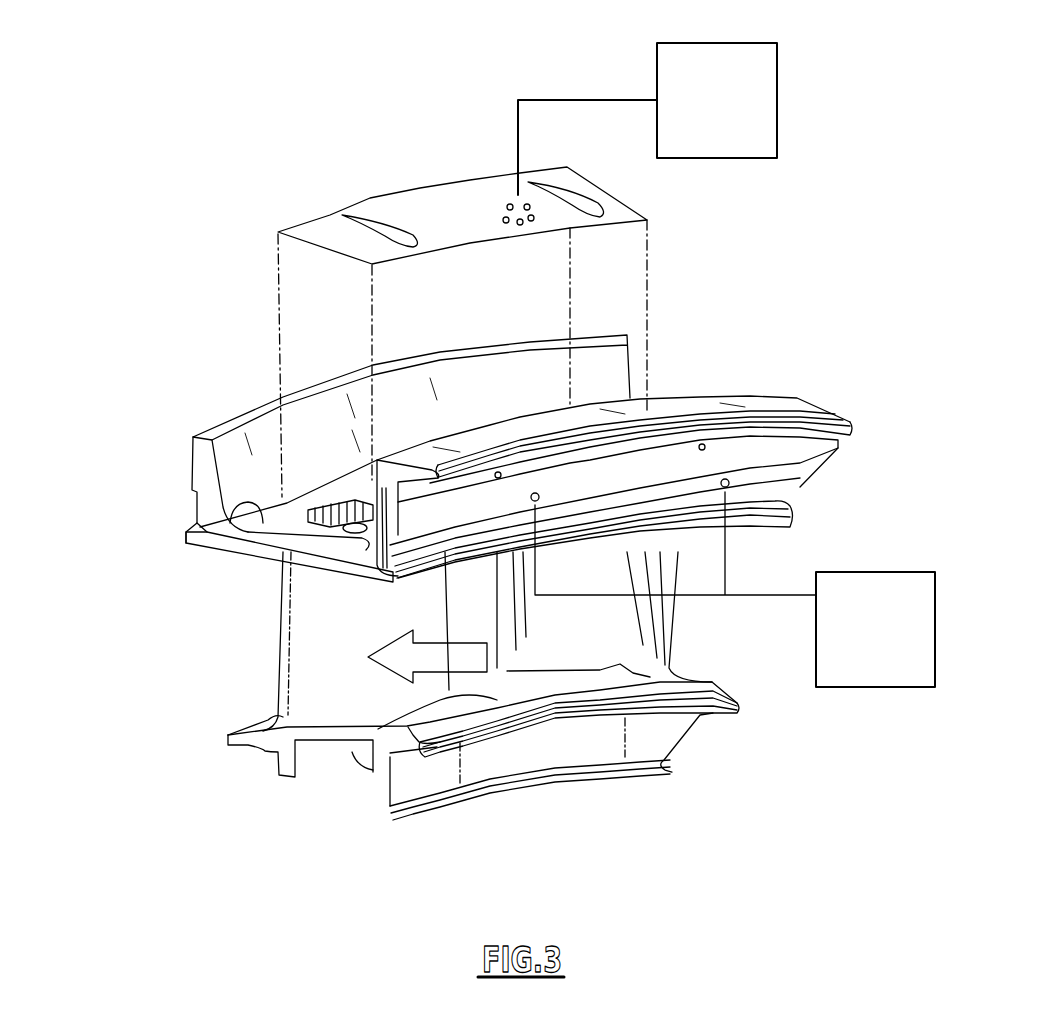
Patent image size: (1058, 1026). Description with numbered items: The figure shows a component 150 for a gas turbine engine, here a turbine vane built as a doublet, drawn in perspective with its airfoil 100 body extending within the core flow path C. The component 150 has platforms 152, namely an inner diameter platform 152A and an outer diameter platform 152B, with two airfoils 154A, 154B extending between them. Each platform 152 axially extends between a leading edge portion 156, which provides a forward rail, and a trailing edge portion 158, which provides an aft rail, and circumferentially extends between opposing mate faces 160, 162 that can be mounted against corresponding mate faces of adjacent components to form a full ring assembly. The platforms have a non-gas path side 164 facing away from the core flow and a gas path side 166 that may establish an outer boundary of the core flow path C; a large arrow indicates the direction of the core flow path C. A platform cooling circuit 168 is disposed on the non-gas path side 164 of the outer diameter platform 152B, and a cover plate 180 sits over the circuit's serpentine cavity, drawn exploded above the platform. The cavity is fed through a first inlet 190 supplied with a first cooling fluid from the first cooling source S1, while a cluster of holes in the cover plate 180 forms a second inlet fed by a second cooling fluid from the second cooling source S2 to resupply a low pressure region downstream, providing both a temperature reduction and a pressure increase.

The airfoil 100 is at (474, 641).
The component 150 is at (140, 422).
The platform 152 is at (168, 541).
The inner diameter platform 152A is at (330, 742).
The outer diameter platform 152B is at (557, 573).
The airfoil 154A is at (312, 630).
The airfoil 154B is at (635, 613).
The leading edge portion 156 is at (770, 455).
The trailing edge portion 158 is at (505, 345).
The mate face 160 is at (772, 510).
The mate face 162 is at (240, 548).
The non-gas path side 164 is at (276, 500).
The gas path side 166 is at (253, 565).
The platform cooling circuit 168 is at (348, 494).
The cover plate 180 is at (440, 207).
The first inlet 190 is at (533, 492).
The core flow path C is at (395, 668).
The first cooling source S1 is at (915, 572).
The second cooling source S2 is at (768, 43).